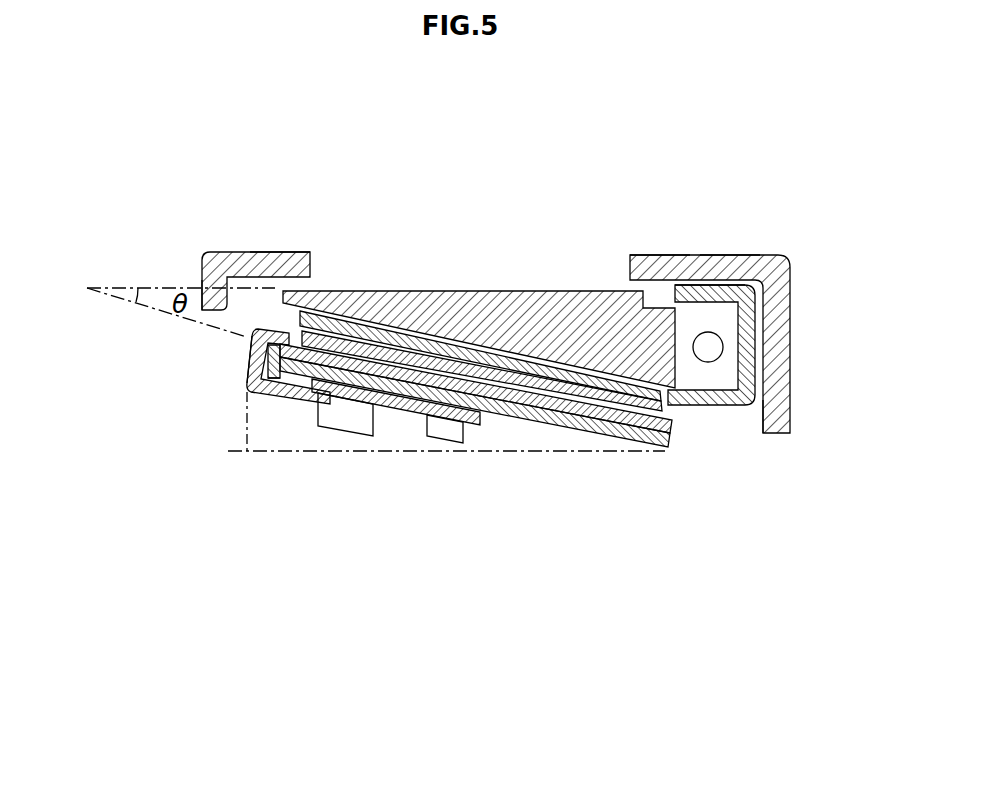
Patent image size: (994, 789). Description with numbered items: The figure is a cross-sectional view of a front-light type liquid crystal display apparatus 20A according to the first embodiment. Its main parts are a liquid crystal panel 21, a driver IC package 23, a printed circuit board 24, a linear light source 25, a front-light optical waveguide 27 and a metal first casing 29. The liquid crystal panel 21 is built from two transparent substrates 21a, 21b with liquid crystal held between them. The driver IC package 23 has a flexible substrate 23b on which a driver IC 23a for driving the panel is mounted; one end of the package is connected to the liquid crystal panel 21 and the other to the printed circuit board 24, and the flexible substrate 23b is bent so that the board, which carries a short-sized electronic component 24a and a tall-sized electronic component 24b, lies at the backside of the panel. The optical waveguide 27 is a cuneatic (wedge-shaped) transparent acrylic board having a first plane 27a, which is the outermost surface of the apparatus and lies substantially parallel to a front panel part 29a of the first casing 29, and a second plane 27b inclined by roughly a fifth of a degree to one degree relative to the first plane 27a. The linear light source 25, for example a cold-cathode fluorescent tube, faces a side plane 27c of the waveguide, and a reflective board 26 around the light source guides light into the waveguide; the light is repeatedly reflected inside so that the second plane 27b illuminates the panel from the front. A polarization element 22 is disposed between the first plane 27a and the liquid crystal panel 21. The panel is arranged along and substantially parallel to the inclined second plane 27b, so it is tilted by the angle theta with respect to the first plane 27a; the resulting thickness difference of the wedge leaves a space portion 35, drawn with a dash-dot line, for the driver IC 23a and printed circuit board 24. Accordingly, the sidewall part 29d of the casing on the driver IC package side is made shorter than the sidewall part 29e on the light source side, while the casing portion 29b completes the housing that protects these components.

The liquid crystal display apparatus 20A is at (630, 110).
The liquid crystal panel 21 is at (563, 429).
The transparent substrate 21a is at (673, 430).
The transparent substrate 21b is at (668, 447).
The polarization element 22 is at (369, 321).
The driver IC package 23 is at (245, 420).
The driver IC 23a is at (280, 379).
The flexible substrate 23b is at (247, 380).
The printed circuit board 24 is at (396, 477).
The short-sized electronic component 24a is at (445, 440).
The tall-sized electronic component 24b is at (355, 432).
The linear light source 25 is at (721, 341).
The reflective board 26 is at (771, 345).
The front-light optical waveguide 27 is at (481, 291).
The first plane 27a is at (450, 342).
The second plane 27b is at (577, 368).
The side plane 27c is at (677, 378).
The first casing 29 is at (478, 318).
The front panel part 29a is at (285, 252).
The upper portion of right bracket 29b is at (630, 262).
The sidewall part 29d is at (195, 290).
The sidewall part 29e is at (791, 424).
The space portion 35 is at (490, 462).